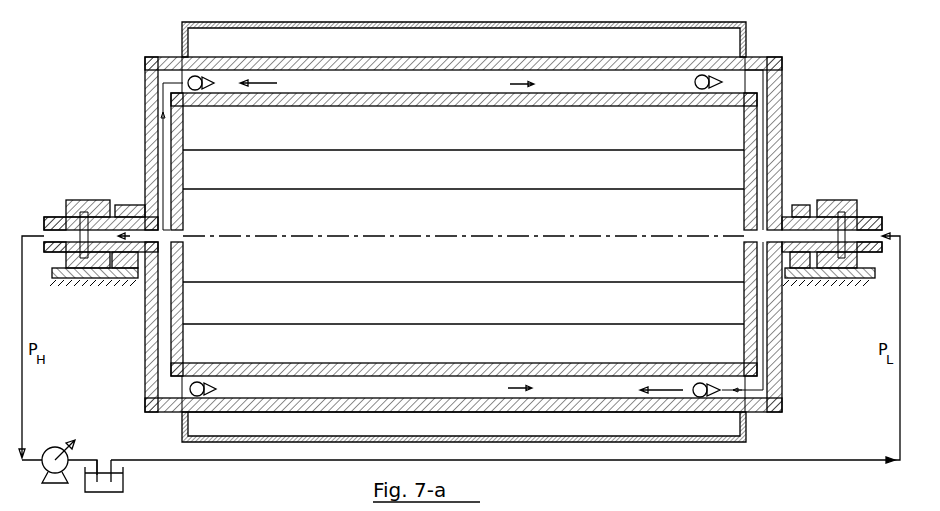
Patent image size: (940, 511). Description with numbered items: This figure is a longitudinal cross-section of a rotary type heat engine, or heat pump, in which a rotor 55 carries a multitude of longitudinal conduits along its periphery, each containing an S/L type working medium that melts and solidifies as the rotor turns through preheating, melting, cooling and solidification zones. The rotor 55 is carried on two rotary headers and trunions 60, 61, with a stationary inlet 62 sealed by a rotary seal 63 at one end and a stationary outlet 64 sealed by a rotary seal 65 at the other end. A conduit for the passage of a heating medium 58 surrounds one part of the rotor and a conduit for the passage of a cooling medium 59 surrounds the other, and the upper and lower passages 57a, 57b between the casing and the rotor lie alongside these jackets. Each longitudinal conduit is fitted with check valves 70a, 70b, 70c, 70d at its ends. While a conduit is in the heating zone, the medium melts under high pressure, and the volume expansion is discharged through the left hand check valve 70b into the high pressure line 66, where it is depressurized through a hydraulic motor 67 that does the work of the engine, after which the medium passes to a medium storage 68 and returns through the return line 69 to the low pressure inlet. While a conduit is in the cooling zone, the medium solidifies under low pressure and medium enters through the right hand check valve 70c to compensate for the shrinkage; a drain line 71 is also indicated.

The rotor 55 is at (784, 97).
The upper heat transfer channel 57a is at (612, 82).
The lower heat transfer channel 57b is at (613, 387).
The heating medium conduit 58 is at (730, 43).
The cooling medium conduit 59 is at (667, 425).
The rotary header and trunion 60 is at (791, 212).
The rotary header and trunion 61 is at (137, 212).
The stationary inlet 62 is at (866, 234).
The rotary seal 63 is at (827, 212).
The stationary outlet 64 is at (57, 234).
The rotary seal 65 is at (101, 212).
The high pressure line 66 is at (24, 397).
The hydraulic motor 67 is at (46, 464).
The medium storage 68 is at (103, 480).
The return pipe 69 is at (818, 460).
The check valve 70a is at (746, 56).
The left hand check valve 70b is at (192, 77).
The right hand check valve 70c is at (706, 398).
The circulation pump 70d is at (200, 396).
The drain line 71 is at (792, 510).